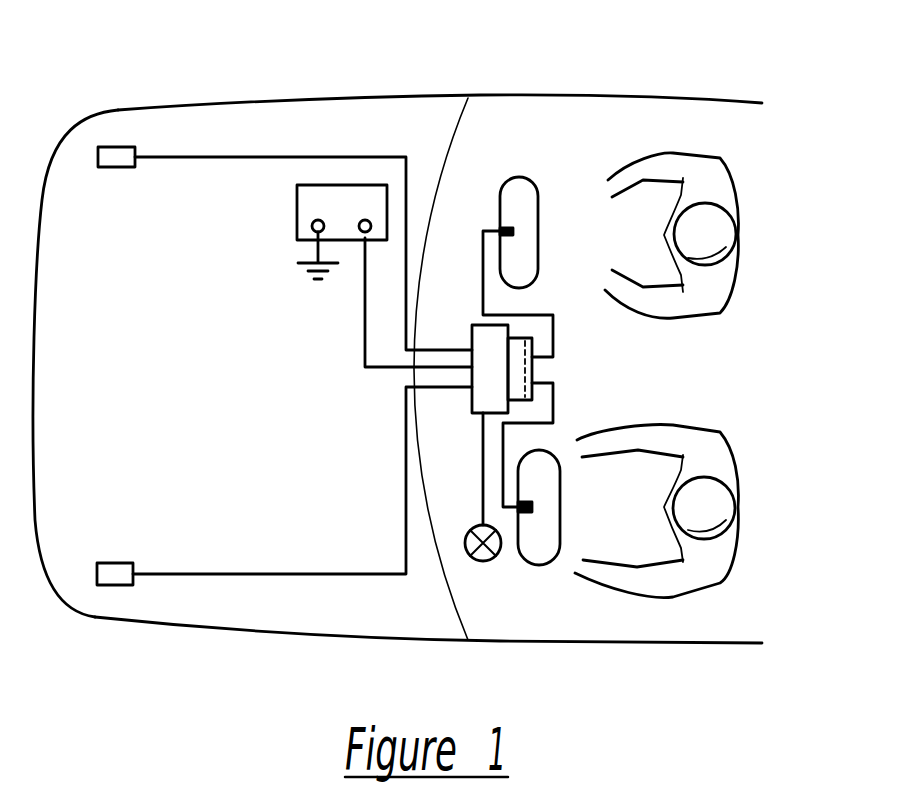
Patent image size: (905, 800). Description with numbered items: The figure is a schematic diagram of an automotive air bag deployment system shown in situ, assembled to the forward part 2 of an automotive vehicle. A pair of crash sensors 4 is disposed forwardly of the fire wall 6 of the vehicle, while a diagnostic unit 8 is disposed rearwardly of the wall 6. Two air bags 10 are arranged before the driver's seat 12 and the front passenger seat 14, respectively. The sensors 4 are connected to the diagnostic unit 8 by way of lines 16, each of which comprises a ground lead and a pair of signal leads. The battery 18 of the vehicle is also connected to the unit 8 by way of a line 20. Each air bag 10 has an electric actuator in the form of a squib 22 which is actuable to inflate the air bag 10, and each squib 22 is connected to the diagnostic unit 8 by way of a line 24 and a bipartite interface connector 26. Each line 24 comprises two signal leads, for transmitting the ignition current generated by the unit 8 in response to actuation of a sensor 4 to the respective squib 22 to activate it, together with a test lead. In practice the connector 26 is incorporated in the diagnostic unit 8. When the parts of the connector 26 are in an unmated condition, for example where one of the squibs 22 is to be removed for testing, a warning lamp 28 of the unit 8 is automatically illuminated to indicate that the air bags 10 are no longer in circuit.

The forward part 2 is at (296, 98).
The crash sensor 4 is at (112, 147).
The fire wall 6 is at (457, 117).
The diagnostic unit 8 is at (490, 343).
The air bag 10 is at (538, 195).
The driver's seat 12 is at (752, 245).
The front passenger seat 14 is at (751, 510).
The line 16 is at (200, 157).
The battery 18 is at (358, 185).
The line 20 is at (365, 298).
The squib 22 is at (513, 231).
The line 24 is at (555, 333).
The bipartite interface connector 26 is at (534, 366).
The warning lamp 28 is at (483, 561).